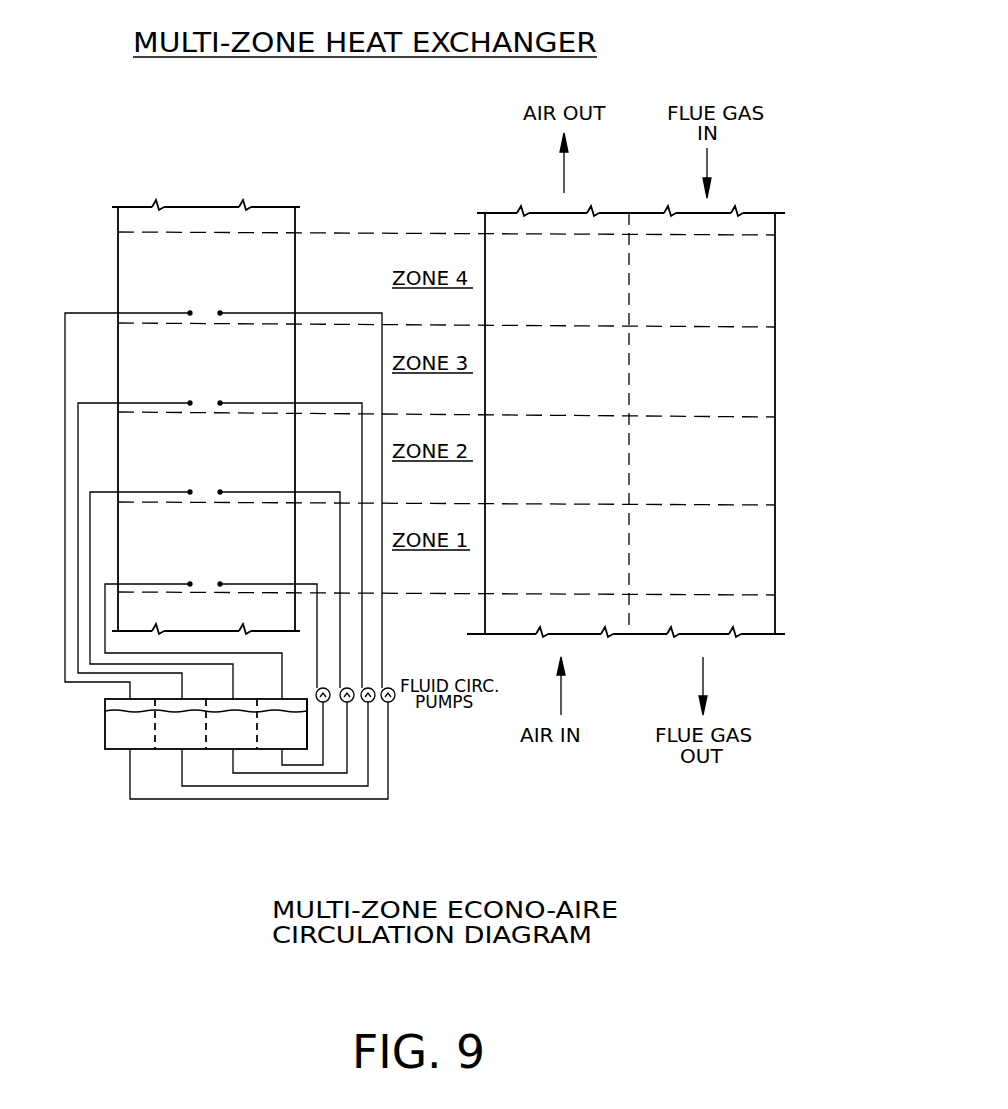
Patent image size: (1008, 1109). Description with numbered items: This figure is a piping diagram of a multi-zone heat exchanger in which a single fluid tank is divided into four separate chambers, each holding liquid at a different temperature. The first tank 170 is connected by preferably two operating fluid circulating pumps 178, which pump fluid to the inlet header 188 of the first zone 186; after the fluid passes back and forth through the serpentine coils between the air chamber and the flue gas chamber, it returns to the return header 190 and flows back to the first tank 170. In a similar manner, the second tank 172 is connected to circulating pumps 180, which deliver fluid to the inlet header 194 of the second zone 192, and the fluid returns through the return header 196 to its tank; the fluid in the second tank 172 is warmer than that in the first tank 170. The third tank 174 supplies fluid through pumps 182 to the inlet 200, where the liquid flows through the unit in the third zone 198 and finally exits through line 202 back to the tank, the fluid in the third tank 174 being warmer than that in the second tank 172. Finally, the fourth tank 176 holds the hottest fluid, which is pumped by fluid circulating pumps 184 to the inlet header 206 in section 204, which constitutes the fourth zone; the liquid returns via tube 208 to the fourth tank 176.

The first tank 170 is at (274, 740).
The second tank 172 is at (223, 745).
The third tank 174 is at (177, 742).
The fourth tank 176 is at (113, 738).
The fluid circulating pumps 178 is at (325, 703).
The circulating pumps 180 is at (348, 703).
The pumps 182 is at (370, 702).
The fluid circulating pumps 184 is at (391, 701).
The zone 1 186 is at (225, 525).
The inlet header 188 is at (221, 583).
The return header 190 is at (190, 583).
The zone 2 192 is at (224, 435).
The inlet header 194 is at (221, 491).
The return header 196 is at (190, 491).
The zone 3 198 is at (222, 355).
The inlet 200 is at (230, 395).
The line 202 is at (190, 402).
The section 204 is at (235, 260).
The inlet header 206 is at (221, 312).
The tube 208 is at (190, 312).